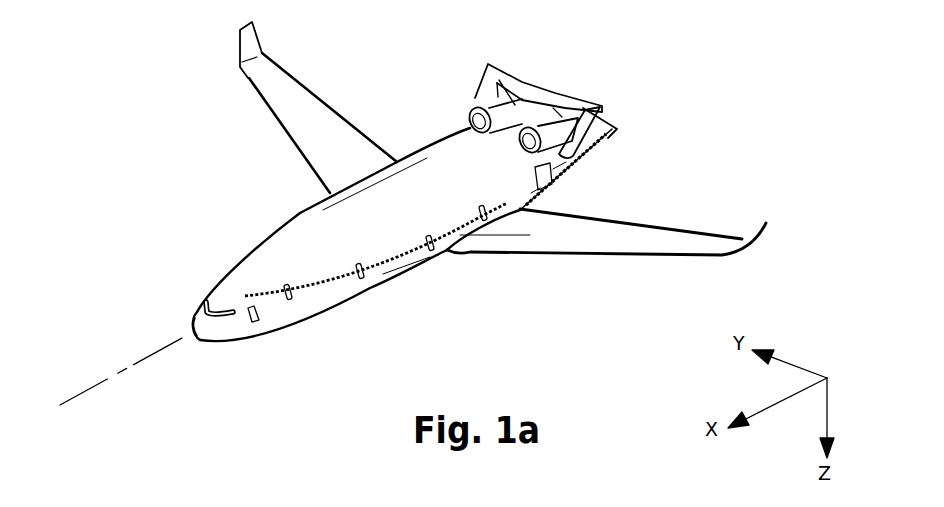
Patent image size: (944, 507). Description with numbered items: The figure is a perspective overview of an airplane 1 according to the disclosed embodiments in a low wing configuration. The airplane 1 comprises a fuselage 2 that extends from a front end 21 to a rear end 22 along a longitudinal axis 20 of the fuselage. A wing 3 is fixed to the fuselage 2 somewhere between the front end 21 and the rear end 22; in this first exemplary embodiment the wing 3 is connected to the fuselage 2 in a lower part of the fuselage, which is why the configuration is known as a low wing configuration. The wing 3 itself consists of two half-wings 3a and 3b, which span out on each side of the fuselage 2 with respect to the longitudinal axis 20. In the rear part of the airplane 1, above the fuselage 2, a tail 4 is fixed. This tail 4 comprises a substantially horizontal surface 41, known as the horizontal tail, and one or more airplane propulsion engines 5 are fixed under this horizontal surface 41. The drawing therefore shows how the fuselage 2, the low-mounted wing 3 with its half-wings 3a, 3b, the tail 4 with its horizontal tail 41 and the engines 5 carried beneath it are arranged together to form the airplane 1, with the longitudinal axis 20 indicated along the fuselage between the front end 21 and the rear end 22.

The airplane 1 is at (188, 172).
The fuselage 2 is at (292, 262).
The wing 3 is at (680, 214).
The half-wing 3a is at (268, 83).
The half-wing 3b is at (598, 237).
The tail 4 is at (461, 74).
The horizontal surface 41 is at (510, 77).
The propulsion engine 5 is at (483, 97).
The longitudinal axis 20 is at (97, 383).
The front end 21 is at (197, 333).
The rear end 22 is at (612, 130).